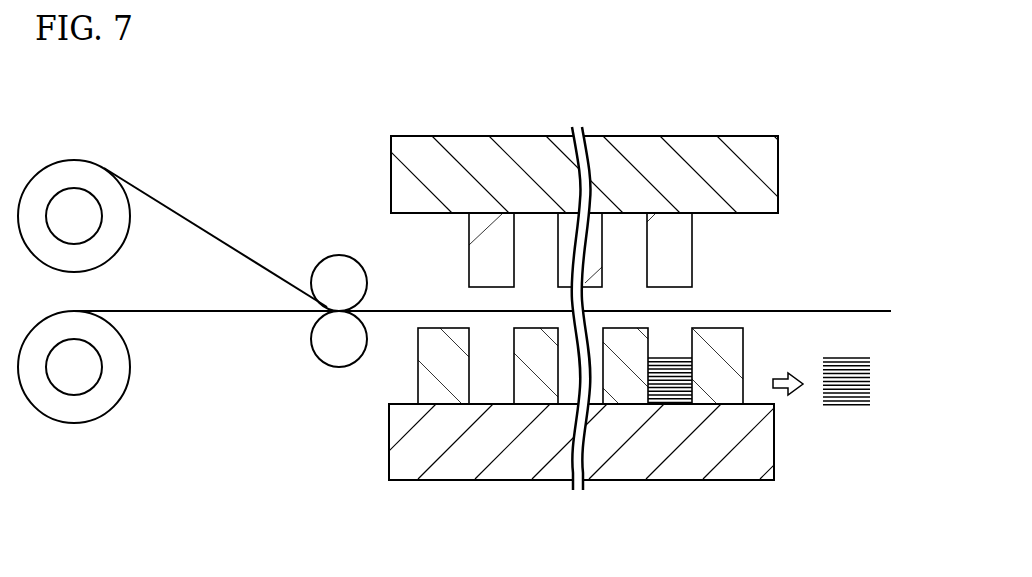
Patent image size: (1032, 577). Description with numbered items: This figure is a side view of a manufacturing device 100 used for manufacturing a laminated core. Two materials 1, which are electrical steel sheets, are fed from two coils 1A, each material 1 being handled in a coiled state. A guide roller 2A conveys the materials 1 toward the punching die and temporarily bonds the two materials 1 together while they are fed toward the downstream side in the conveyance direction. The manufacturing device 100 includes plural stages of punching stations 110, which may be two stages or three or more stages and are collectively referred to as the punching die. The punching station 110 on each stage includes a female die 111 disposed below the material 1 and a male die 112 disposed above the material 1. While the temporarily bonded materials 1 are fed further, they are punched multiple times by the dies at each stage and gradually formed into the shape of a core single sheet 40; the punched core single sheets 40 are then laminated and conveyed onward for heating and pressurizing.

The coil 1A is at (55, 160).
The material 1 is at (195, 224).
The guide roller 2A is at (339, 255).
The manufacturing device 100 is at (648, 307).
The punching station 110 is at (489, 207).
The female die 111 is at (490, 372).
The male die 112 is at (482, 263).
The core single sheet 40 is at (669, 395).